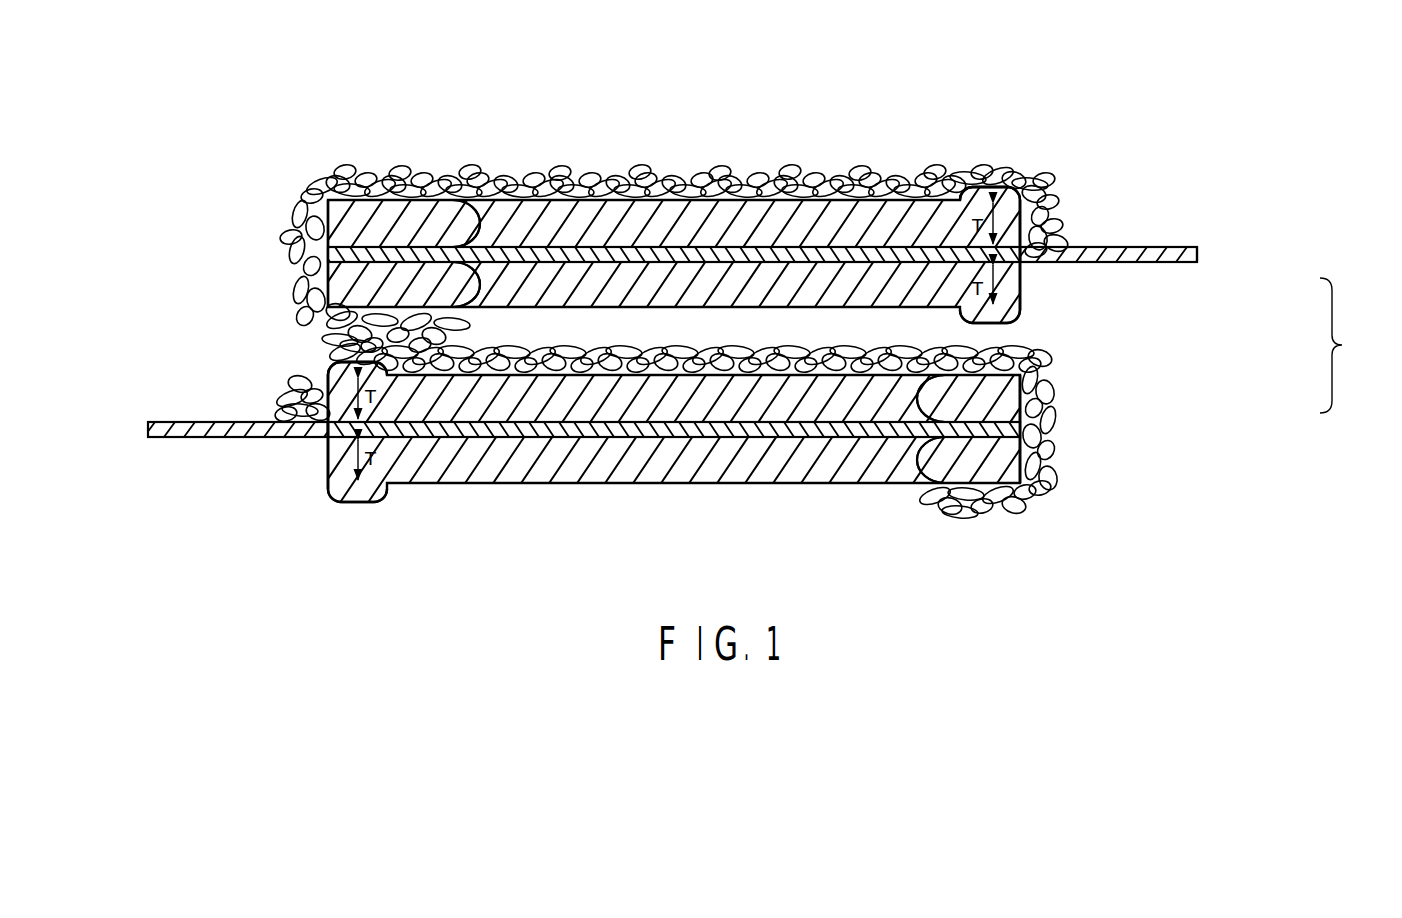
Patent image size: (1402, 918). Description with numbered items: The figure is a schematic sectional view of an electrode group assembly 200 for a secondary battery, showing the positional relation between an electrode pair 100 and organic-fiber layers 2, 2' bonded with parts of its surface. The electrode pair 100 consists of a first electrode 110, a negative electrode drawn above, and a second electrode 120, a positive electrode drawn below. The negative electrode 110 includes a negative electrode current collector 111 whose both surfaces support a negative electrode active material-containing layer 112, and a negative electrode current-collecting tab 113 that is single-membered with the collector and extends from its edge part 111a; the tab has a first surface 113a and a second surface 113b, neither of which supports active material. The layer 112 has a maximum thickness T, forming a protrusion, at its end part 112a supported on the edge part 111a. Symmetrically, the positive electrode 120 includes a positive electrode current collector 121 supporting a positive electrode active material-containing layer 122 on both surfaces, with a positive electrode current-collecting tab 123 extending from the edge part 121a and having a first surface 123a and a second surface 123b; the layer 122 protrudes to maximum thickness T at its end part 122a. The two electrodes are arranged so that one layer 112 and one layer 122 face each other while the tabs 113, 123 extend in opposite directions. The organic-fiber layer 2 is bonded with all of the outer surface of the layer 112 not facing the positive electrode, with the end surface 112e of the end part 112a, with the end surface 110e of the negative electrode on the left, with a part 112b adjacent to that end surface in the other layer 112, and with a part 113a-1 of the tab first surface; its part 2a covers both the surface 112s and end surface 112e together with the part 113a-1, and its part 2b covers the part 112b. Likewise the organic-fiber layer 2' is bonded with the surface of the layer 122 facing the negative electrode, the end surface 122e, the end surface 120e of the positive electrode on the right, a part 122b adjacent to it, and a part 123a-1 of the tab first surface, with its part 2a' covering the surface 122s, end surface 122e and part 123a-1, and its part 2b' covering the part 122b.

The electrode pair 100 is at (1352, 345).
The electrode group assembly 200 is at (1147, 146).
The first electrode (negative electrode) 110 is at (1240, 265).
The end surface of the negative electrode 110e is at (300, 207).
The negative electrode current collector 111 is at (625, 256).
The edge part of the negative electrode current collector 111a is at (1021, 300).
The negative electrode active material-containing layer 112 is at (541, 278).
The end part of the negative electrode active material-containing layer 112a is at (1003, 195).
The part adjacent to the end surface of the negative electrode 112b is at (362, 222).
The end surface of the end part of the negative electrode active material-containing 112e is at (1055, 210).
The surface of the end part of the negative electrode active material-containing lay 112s is at (990, 190).
The negative electrode current-collecting tab 113 is at (1192, 247).
The first surface of the negative electrode current-collecting tab 113a is at (1147, 247).
The part of the first surface of the negative electrode current-collecting tab 113a-1 is at (1063, 265).
The second surface of the negative electrode current-collecting tab 113b is at (1167, 264).
The second electrode (positive electrode) 120 is at (1212, 428).
The end surface of the positive electrode 120e is at (1055, 403).
The positive electrode current collector 121 is at (617, 432).
The edge part of the positive electrode current collector 121a is at (343, 450).
The positive electrode active material-containing layer 122 is at (707, 465).
The end part of the positive electrode active material-containing layer 122a is at (420, 340).
The part adjacent to the end surface of the positive electrode 122b is at (1010, 470).
The end surface of the end part of the positive electrode active material-containing 122e is at (305, 400).
The surface of the end part of the positive electrode active material-containing lay 122s is at (342, 341).
The positive electrode current-collecting tab 123 is at (148, 430).
The first surface of the positive electrode current-collecting tab 123a is at (158, 422).
The part of the first surface of the positive electrode current-collecting tab 123a-1 is at (285, 438).
The second surface of the positive electrode current-collecting tab 123b is at (165, 440).
The organic-fiber layer 2 is at (681, 149).
The part of the organic-fiber layer 2a is at (1051, 194).
The part of the organic-fiber layer 2a' is at (267, 388).
The part of the organic-fiber layer 2b is at (356, 327).
The part of the organic-fiber layer 2b' is at (978, 530).
The organic-fiber layer 2' is at (1070, 431).